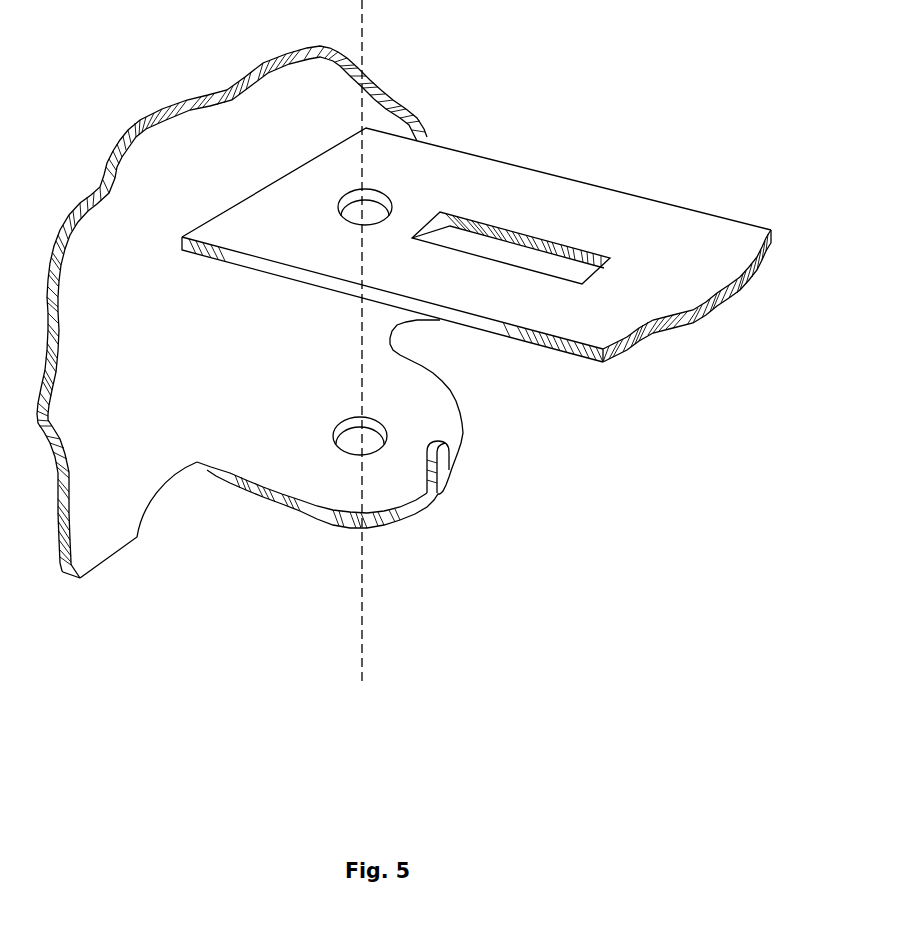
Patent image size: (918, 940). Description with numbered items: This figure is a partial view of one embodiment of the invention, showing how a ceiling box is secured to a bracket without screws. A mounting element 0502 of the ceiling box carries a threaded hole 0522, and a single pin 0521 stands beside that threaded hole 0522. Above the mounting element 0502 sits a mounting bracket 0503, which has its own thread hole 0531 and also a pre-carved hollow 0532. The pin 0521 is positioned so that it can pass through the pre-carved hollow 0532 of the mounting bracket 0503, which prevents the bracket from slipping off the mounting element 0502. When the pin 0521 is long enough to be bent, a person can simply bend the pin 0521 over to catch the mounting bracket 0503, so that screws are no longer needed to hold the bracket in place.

The mounting bracket 0503 is at (685, 192).
The thread hole 0531 is at (375, 191).
The pre-carved hollow 0532 is at (518, 257).
The mounting element 0502 is at (430, 400).
The pin 0521 is at (443, 468).
The threaded hole 0522 is at (345, 427).